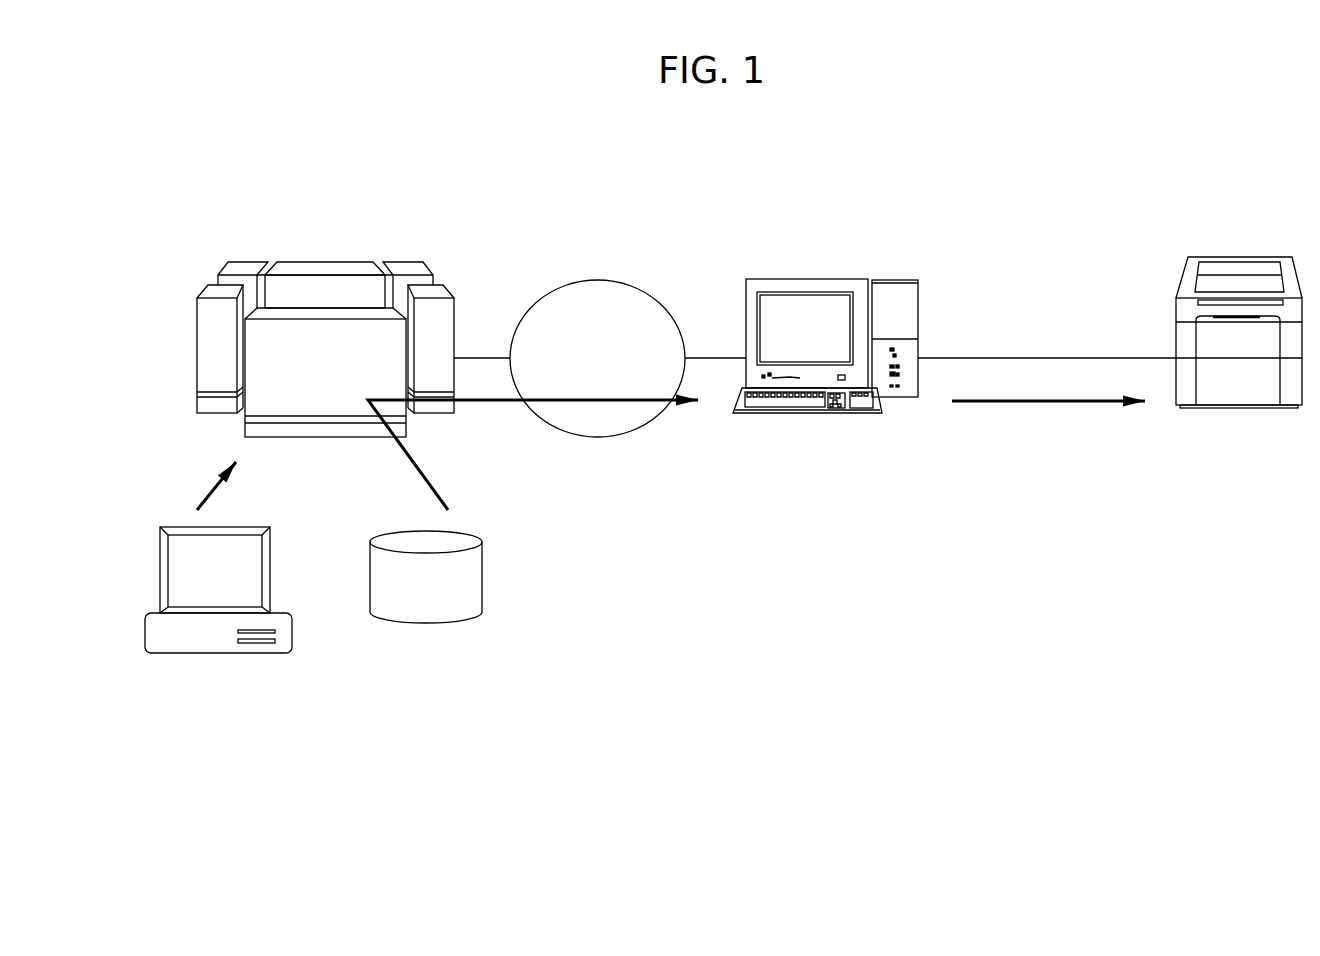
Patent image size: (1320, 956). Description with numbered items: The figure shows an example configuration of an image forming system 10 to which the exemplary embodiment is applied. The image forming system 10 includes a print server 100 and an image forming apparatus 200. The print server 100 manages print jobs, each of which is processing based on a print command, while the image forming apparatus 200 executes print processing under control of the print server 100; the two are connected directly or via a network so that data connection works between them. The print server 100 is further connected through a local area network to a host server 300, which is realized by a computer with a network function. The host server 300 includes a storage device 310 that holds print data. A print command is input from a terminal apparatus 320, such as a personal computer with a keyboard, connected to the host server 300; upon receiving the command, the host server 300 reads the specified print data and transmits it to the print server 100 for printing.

The image forming system 10 is at (527, 145).
The host server 300 is at (325, 250).
The print server 100 is at (803, 260).
The image forming apparatus 200 is at (1233, 235).
The terminal apparatus 320 is at (206, 670).
The storage device 310 is at (425, 645).